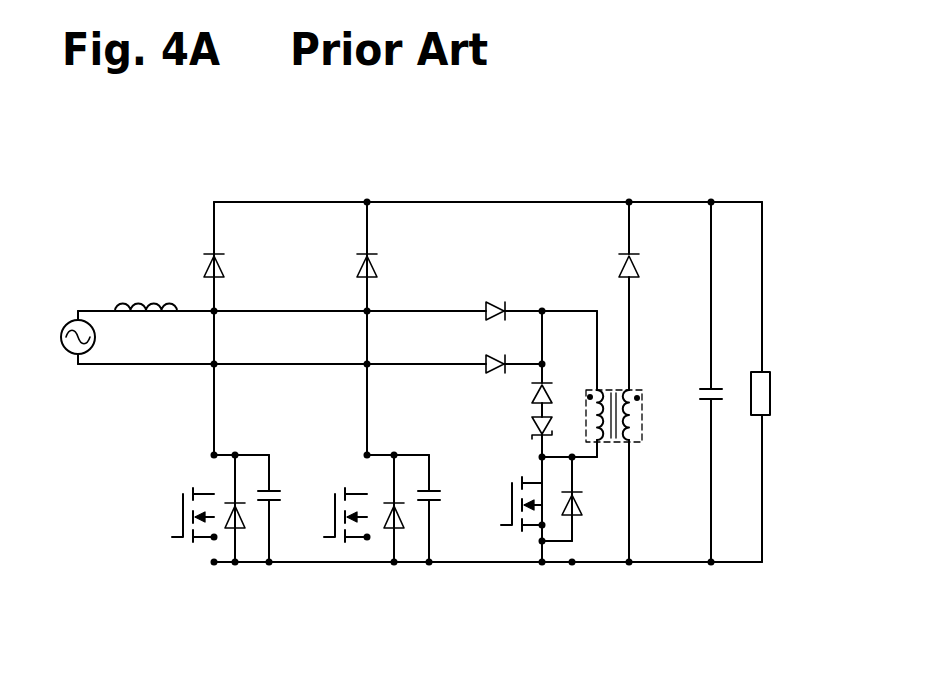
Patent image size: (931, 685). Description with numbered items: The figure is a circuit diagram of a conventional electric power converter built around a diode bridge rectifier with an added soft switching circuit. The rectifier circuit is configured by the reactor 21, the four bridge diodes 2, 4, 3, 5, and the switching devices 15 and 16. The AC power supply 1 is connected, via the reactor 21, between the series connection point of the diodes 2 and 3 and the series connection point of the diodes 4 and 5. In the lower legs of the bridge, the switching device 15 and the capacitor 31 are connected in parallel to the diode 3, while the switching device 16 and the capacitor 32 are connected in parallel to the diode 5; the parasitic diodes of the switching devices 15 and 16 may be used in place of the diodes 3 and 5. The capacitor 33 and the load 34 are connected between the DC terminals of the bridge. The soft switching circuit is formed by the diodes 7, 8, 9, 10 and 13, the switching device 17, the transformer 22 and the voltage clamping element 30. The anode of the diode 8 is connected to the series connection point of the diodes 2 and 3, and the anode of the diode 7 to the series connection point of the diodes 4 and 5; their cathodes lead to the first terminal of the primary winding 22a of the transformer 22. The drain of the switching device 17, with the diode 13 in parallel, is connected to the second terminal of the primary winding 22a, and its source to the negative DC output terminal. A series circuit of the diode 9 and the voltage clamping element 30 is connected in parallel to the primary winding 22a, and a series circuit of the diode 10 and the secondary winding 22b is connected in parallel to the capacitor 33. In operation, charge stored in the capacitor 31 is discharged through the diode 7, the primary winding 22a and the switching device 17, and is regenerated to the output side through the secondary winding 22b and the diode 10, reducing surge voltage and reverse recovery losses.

The AC power supply 1 is at (55, 345).
The reactor 21 is at (148, 296).
The diode 2 is at (200, 268).
The diode 4 is at (350, 268).
The diode 10 is at (608, 268).
The diode 8 is at (490, 302).
The diode 7 is at (501, 374).
The diode 9 is at (530, 396).
The voltage clamping element 30 is at (532, 430).
The transformer 22 is at (630, 405).
The primary winding 22a is at (590, 395).
The secondary winding 22b is at (644, 430).
The capacitor 33 is at (718, 402).
The load 34 is at (773, 402).
The switching device 15 is at (195, 483).
The switching device 16 is at (358, 483).
The switching device 17 is at (552, 520).
The diode 3 is at (253, 527).
The diode 5 is at (410, 518).
The diode 13 is at (587, 503).
The capacitor 31 is at (251, 489).
The capacitor 32 is at (458, 508).